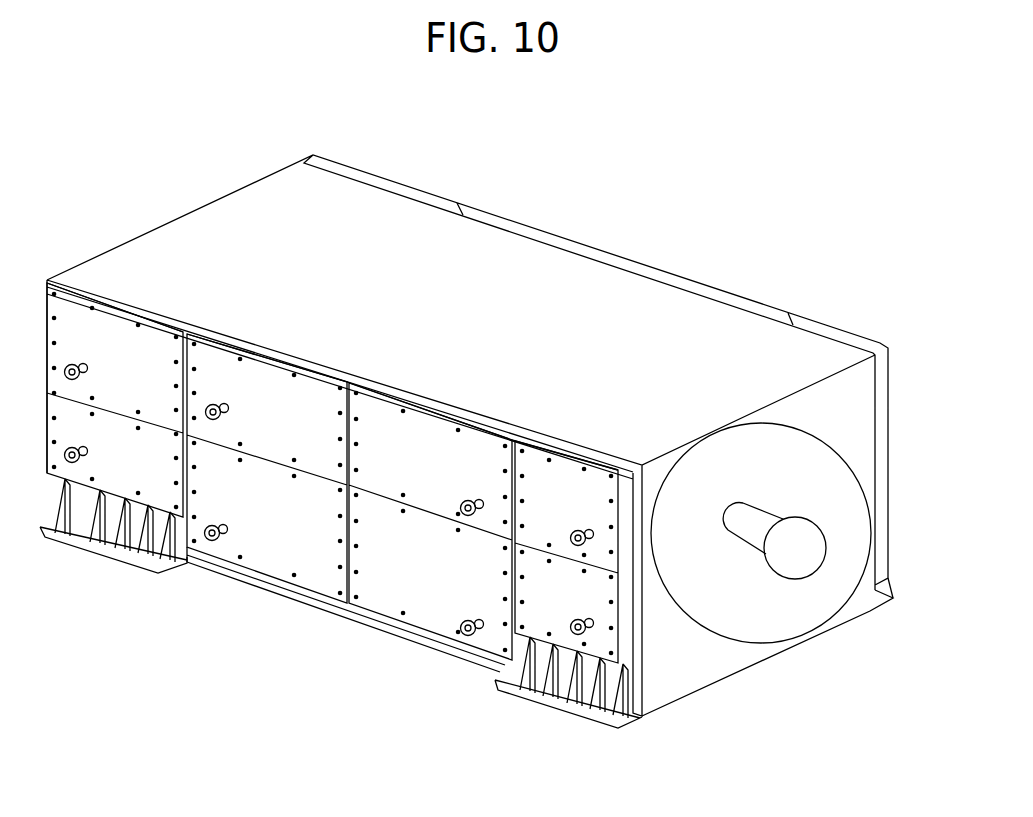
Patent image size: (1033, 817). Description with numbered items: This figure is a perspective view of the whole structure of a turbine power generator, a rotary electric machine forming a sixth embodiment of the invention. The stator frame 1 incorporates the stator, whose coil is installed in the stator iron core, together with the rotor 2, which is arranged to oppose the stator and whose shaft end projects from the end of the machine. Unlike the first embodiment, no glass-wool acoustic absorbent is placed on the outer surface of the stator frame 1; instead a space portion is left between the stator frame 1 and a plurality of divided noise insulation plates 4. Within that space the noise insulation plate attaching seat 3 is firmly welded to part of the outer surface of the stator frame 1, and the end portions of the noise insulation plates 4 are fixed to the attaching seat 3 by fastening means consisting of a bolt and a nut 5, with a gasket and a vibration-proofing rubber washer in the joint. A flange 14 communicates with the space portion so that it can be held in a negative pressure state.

The stator frame 1 is at (340, 227).
The rotor 2 is at (783, 552).
The noise insulation plate attaching seat 3 is at (323, 377).
The noise insulation plate 4 is at (427, 580).
The nut 5 is at (450, 633).
The flange 14 is at (210, 540).